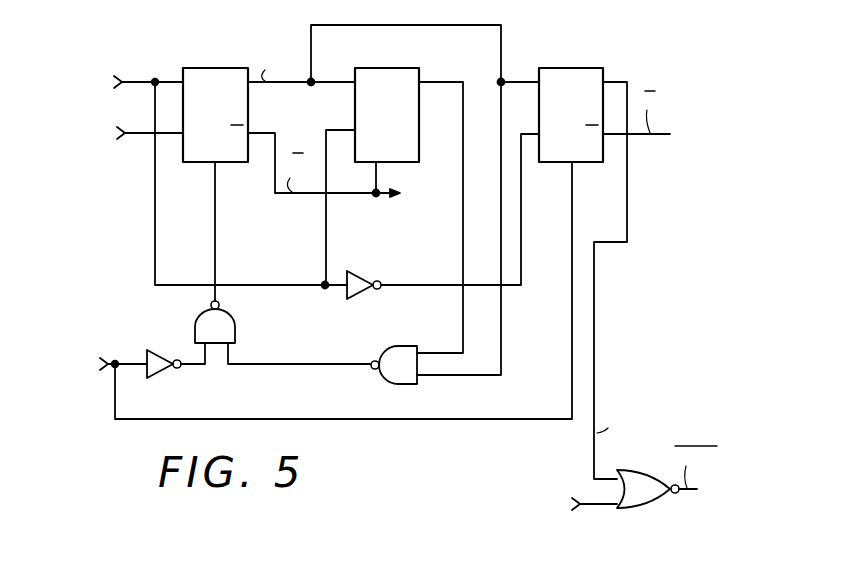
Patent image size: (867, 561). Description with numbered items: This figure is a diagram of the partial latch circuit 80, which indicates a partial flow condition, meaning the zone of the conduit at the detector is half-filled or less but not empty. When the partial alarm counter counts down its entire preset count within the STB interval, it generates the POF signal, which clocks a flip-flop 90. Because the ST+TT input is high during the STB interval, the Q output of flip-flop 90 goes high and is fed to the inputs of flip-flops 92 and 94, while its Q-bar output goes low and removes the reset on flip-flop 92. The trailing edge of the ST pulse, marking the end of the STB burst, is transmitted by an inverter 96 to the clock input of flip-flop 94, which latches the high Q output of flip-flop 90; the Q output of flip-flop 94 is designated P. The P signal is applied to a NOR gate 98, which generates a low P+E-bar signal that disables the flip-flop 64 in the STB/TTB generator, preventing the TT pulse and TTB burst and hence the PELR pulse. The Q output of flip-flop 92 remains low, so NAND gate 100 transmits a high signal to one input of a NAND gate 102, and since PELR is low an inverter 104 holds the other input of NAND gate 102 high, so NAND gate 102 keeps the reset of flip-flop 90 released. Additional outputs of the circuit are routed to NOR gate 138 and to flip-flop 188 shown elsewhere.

The partial latch circuit 80 is at (178, 24).
The flip-flop 90 is at (214, 68).
The flip-flop 92 is at (400, 68).
The flip-flop 94 is at (577, 68).
The inverter 96 is at (358, 292).
The NOR gate 98 is at (630, 512).
The NAND gate 100 is at (394, 384).
The NAND gate 102 is at (236, 335).
The inverter 104 is at (163, 352).
The NOR gate (FIG. 8) 138 is at (716, 156).
The flip-flop (FIG. 13) 188 is at (420, 216).
The flip-flop 64 is at (733, 517).